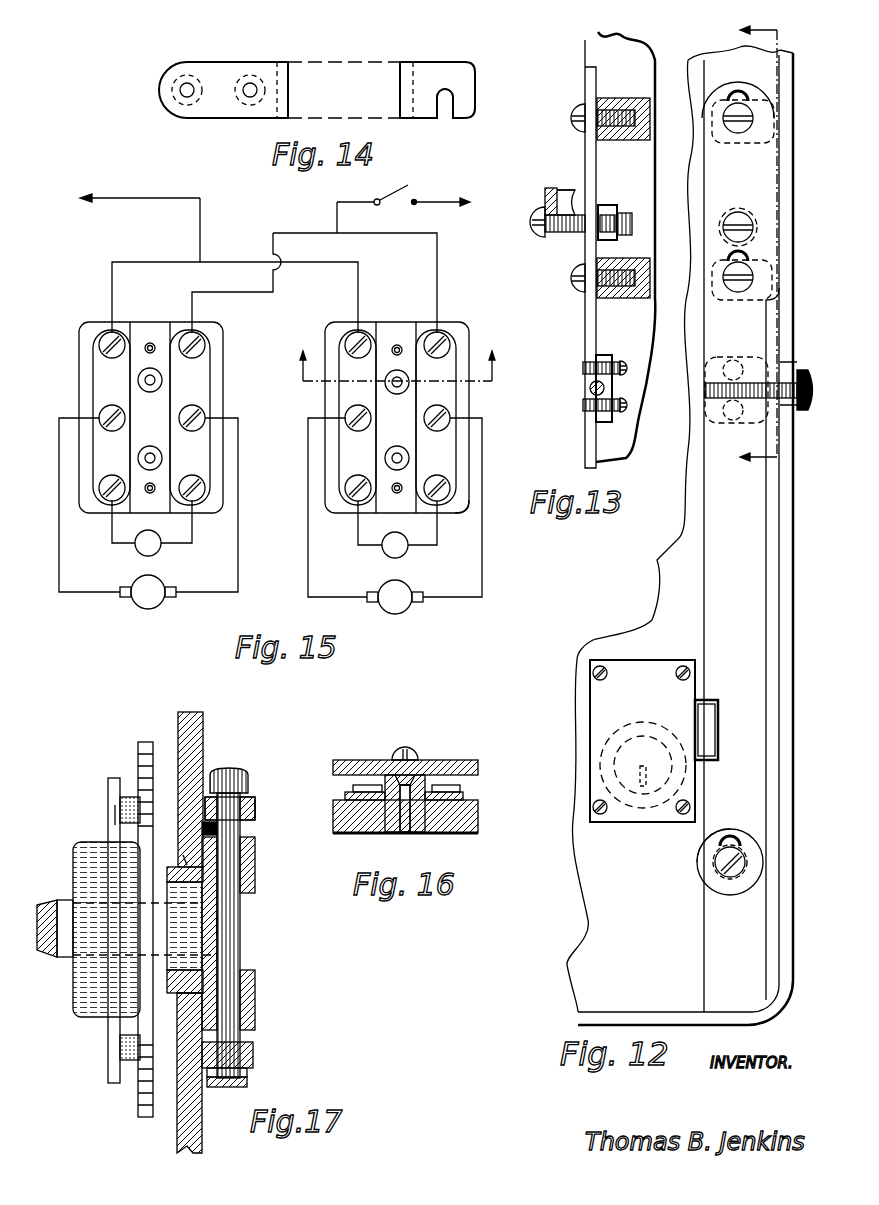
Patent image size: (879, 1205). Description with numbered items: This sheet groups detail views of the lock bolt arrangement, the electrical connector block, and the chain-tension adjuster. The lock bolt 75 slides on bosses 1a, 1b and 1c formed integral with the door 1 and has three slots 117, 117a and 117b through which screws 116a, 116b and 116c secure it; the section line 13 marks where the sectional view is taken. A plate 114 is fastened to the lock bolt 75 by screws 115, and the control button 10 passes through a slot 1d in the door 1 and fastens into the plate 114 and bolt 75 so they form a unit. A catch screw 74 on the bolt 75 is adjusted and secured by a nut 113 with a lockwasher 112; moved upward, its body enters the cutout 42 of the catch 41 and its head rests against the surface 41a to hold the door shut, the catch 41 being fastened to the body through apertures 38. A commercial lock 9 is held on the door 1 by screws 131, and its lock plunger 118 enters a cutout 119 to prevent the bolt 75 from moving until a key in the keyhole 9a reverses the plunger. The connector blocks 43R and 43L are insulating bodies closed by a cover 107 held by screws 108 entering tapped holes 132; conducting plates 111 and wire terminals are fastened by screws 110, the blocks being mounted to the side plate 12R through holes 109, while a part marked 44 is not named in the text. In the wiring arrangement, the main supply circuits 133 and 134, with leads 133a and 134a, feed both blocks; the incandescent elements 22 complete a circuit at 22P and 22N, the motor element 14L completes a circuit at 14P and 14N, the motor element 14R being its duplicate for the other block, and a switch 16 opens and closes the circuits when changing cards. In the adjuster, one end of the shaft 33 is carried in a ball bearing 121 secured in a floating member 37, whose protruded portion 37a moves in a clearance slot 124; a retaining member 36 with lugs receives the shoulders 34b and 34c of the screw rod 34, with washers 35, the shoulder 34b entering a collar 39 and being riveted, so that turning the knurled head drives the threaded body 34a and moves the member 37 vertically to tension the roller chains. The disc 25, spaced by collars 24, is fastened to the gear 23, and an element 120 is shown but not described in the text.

In FIG. 12, the door 1 is at (796, 186).
In FIG. 13, the boss 1a is at (636, 97).
In FIG. 13, the boss 1b is at (633, 255).
In FIG. 12, the boss 1c is at (706, 873).
In FIG. 12, the slot 1d is at (788, 372).
In FIG. 12, the commercial lock 9 is at (600, 700).
In FIG. 12, the keyhole 9a is at (640, 782).
In FIG. 13, the control button 10 is at (590, 389).
In FIG. 12, the control button 10 is at (810, 372).
In FIG. 17, the side plate 12R is at (173, 860).
In FIG. 12, the section line 13— 13 is at (758, 249).
In FIG. 15, the motor element 14L is at (157, 606).
In FIG. 15, the right motor 14R is at (405, 610).
In FIG. 15, the motor positive connection 14P is at (102, 410).
In FIG. 15, the motor negative connection 14N is at (200, 408).
In FIG. 15, the switch 16 is at (373, 185).
In FIG. 15, the incandescent element 22 is at (160, 552).
In FIG. 15, the incandescent element positive connection 22P is at (100, 500).
In FIG. 15, the incandescent element negative connection 22N is at (205, 498).
In FIG. 17, the sprocket gear 23 is at (143, 742).
In FIG. 17, the collar 24 is at (127, 797).
In FIG. 17, the disc 25 is at (112, 778).
In FIG. 17, the shaft 33 is at (57, 958).
In FIG. 17, the screw rod 34 is at (245, 770).
In FIG. 17, the threaded body 34a is at (240, 925).
In FIG. 17, the screw rod shoulder 34b is at (253, 1047).
In FIG. 17, the screw rod shoulder 34c is at (220, 830).
In FIG. 17, the washer 35 is at (255, 797).
In FIG. 17, the retaining member 36 is at (257, 813).
In FIG. 17, the floating member 37 is at (255, 880).
In FIG. 17, the protruded portion 37a is at (170, 993).
In FIG. 14, the aperture 38 is at (251, 87).
In FIG. 17, the collar 39 is at (248, 1082).
In FIG. 14, the catch 41 is at (490, 80).
In FIG. 13, the catch 41 is at (553, 188).
In FIG. 13, the catch surface 41a is at (545, 200).
In FIG. 14, the cutout 42 is at (447, 115).
In FIG. 13, the cutout 42 is at (561, 234).
In FIG. 15, the electrical connector block 43L is at (80, 358).
In FIG. 15, the electrical connector block 43R is at (470, 338).
In FIG. 16, the electrical connector block 43R is at (478, 826).
In FIG. 16, the post 44 is at (435, 775).
In FIG. 13, the catch screw 74 is at (532, 236).
In FIG. 13, the lock bolt 75 is at (586, 330).
In FIG. 12, the lock bolt 75 is at (700, 578).
In FIG. 16, the cover 107 is at (455, 760).
In FIG. 16, the screw 108 is at (410, 752).
In FIG. 15, the hole 109 is at (405, 456).
In FIG. 16, the hole 109 is at (405, 835).
In FIG. 15, the screw 110 is at (445, 483).
In FIG. 16, the screw 110 is at (455, 788).
In FIG. 15, the conducting plate 111 is at (456, 505).
In FIG. 16, the conducting plate 111 is at (462, 796).
In FIG. 13, the lockwasher 112 is at (606, 204).
In FIG. 13, the nut 113 is at (614, 211).
In FIG. 13, the plate 114 is at (602, 354).
In FIG. 13, the screw 115 is at (621, 362).
In FIG. 12, the screw 116a is at (753, 113).
In FIG. 12, the screw 116b is at (779, 275).
In FIG. 12, the screw 116c is at (745, 857).
In FIG. 12, the slot 117 is at (750, 98).
In FIG. 12, the slot 117a is at (748, 258).
In FIG. 12, the slot 117b is at (738, 843).
In FIG. 12, the lock plunger 118 is at (706, 728).
In FIG. 12, the cutout 119 is at (718, 747).
In FIG. 17, the nut 120 is at (115, 813).
In FIG. 17, the ball bearing 121 is at (192, 938).
In FIG. 17, the clearance slot 124 is at (185, 860).
In FIG. 12, the screw 131 is at (608, 670).
In FIG. 15, the tapped hole 132 is at (398, 342).
In FIG. 15, the main electrical supply circuit 133 is at (200, 232).
In FIG. 15, the positive branch 133a is at (184, 263).
In FIG. 15, the main electrical supply circuit 134 is at (337, 209).
In FIG. 15, the negative branch 134a is at (408, 233).